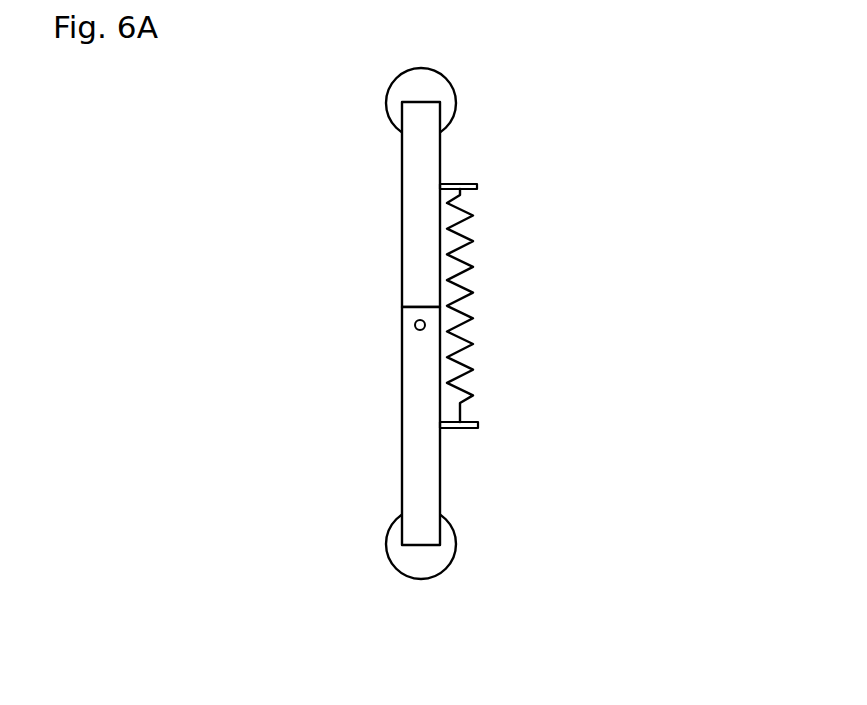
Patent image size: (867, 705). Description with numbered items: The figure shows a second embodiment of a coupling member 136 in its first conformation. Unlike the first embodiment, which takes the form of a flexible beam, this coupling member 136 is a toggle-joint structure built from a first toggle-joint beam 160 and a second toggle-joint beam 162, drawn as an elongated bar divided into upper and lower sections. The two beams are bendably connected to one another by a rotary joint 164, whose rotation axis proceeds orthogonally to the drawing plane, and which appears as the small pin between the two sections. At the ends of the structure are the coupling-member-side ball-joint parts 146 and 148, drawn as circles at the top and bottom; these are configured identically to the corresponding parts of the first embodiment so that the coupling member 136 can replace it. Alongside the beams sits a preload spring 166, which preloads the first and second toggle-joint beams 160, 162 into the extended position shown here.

The coupling member 136 is at (612, 290).
The coupling-member-side ball-joint part 146 is at (448, 92).
The coupling-member-side ball-joint part 148 is at (448, 538).
The first toggle-joint beam 160 is at (410, 200).
The second toggle-joint beam 162 is at (410, 407).
The rotary joint 164 is at (415, 325).
The preload spring 166 is at (467, 263).